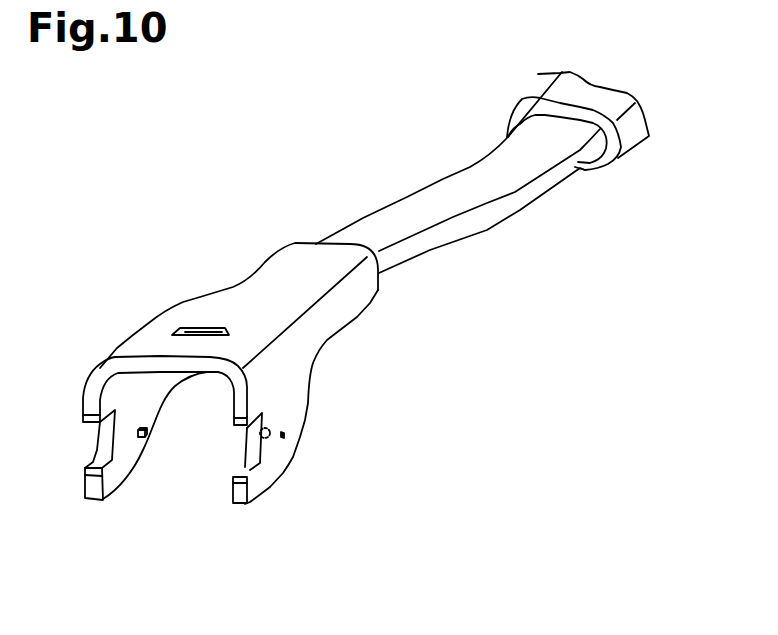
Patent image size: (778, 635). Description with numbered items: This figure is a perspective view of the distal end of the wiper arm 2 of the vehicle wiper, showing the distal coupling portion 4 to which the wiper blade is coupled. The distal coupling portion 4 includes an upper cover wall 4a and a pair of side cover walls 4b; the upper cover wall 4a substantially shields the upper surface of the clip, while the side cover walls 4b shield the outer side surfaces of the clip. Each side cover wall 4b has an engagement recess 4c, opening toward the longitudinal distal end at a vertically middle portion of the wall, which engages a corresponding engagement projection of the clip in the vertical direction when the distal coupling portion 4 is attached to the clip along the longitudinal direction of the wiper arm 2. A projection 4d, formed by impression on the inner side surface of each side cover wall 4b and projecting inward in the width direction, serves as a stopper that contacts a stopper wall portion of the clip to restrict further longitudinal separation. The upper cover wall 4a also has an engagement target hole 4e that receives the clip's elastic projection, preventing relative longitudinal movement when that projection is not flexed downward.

The wiper arm 2 is at (408, 196).
The distal coupling portion 4 is at (140, 332).
The upper cover wall 4a is at (198, 311).
The side cover walls 4b is at (127, 450).
The engagement recess 4c is at (102, 465).
The projection 4d is at (147, 433).
The engagement target hole 4e is at (215, 330).